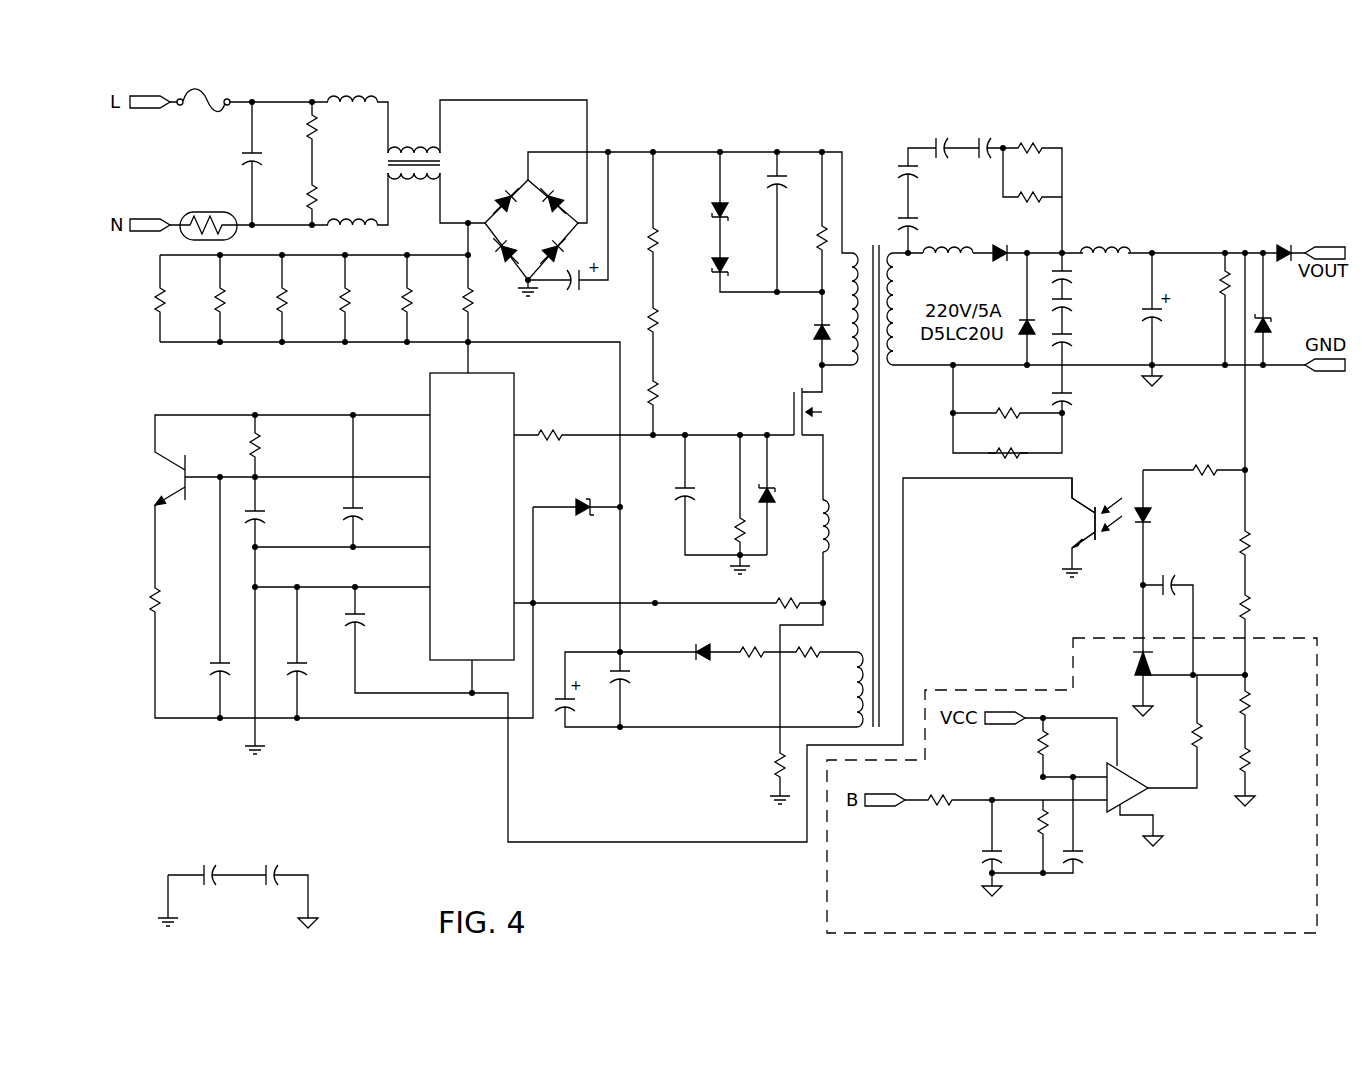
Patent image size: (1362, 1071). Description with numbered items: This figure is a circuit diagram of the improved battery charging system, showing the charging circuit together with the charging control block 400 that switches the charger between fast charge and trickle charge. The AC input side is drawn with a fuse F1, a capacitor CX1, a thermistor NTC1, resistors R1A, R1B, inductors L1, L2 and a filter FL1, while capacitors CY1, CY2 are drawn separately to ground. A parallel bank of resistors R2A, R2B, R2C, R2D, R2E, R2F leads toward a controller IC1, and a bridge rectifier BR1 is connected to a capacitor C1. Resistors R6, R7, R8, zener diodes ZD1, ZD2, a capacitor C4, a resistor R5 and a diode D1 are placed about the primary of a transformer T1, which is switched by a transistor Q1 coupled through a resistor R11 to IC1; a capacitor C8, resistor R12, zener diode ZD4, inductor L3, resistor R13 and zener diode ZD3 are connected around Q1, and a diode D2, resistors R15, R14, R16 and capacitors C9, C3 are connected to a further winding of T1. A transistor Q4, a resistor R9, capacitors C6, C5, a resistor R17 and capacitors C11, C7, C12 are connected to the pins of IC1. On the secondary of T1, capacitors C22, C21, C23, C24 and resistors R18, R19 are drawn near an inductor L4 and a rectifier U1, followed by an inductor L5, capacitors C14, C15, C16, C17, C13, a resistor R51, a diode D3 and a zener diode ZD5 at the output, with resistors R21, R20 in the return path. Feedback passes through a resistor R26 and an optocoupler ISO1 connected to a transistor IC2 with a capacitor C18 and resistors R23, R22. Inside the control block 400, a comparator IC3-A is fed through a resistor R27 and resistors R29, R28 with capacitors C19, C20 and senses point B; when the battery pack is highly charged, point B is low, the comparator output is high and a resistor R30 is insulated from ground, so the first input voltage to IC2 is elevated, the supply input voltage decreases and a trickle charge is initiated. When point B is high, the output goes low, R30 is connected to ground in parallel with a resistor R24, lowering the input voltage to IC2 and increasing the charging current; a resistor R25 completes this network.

The fuse F1 is at (203, 91).
The X capacitor CX1 is at (228, 157).
The NTC thermistor NTC1 is at (208, 213).
The resistor R1A is at (293, 127).
The resistor R1B is at (293, 197).
The inductor L1 is at (353, 85).
The inductor L2 is at (353, 213).
The line filter FL1 is at (414, 151).
The resistor R2A is at (140, 300).
The resistor R2B is at (200, 300).
The resistor R2C is at (262, 300).
The resistor R2D is at (325, 300).
The resistor R2E is at (387, 300).
The resistor R2F is at (449, 300).
The bridge rectifier BR1 is at (520, 223).
The bulk capacitor C1 is at (575, 296).
The resistor R6 is at (639, 240).
The resistor R7 is at (668, 320).
The resistor R8 is at (668, 393).
The zener diode ZD1 is at (698, 210).
The zener diode ZD2 is at (698, 265).
The capacitor C4 is at (758, 180).
The resistor R5 is at (808, 238).
The diode D1 is at (806, 332).
The transformer T1 is at (857, 481).
The switching transistor Q1 is at (832, 411).
The resistor R11 is at (551, 425).
The capacitor C8 is at (696, 483).
The resistor R12 is at (720, 530).
The zener diode ZD4 is at (786, 487).
The inductor L3 is at (813, 526).
The resistor R13 is at (788, 593).
The zener diode ZD3 is at (585, 497).
The diode D2 is at (703, 637).
The resistor R15 is at (752, 668).
The resistor R14 is at (809, 668).
The resistor R16 is at (761, 765).
The capacitor C9 is at (641, 675).
The capacitor C3 is at (584, 703).
The PWM controller IC IC1 is at (472, 516).
The transistor Q4 is at (144, 486).
The resistor R9 is at (269, 445).
The capacitor C6 is at (273, 515).
The capacitor C5 is at (372, 512).
The resistor R17 is at (176, 600).
The capacitor C11 is at (199, 667).
The capacitor C7 is at (315, 667).
The capacitor C12 is at (379, 618).
The capacitor C22 is at (885, 170).
The capacitor C21 is at (926, 222).
The capacitor C23 is at (936, 131).
The capacitor C24 is at (988, 131).
The resistor R18 is at (1030, 136).
The resistor R19 is at (1030, 187).
The inductor L4 is at (948, 267).
The output rectifier diode U1 is at (1000, 267).
The inductor L5 is at (1106, 236).
The capacitor C14 is at (1082, 275).
The capacitor C15 is at (1082, 303).
The capacitor C16 is at (1082, 338).
The capacitor C17 is at (1082, 397).
The output capacitor C13 is at (1174, 314).
The resistor R51 is at (1207, 283).
The diode D3 is at (1284, 235).
The zener diode ZD5 is at (1281, 320).
The resistor R21 is at (1007, 402).
The resistor R20 is at (1007, 442).
The resistor R26 is at (1205, 459).
The optocoupler ISO1 is at (1146, 513).
The capacitor C18 is at (1184, 577).
The resistor R23 is at (1266, 543).
The resistor R22 is at (1266, 607).
The transistor IC2 is at (1123, 664).
The resistor R30 is at (1216, 735).
The resistor R24 is at (1268, 703).
The resistor R25 is at (1268, 760).
The resistor R29 is at (1063, 743).
The comparator IC3-A is at (1141, 783).
The resistor R27 is at (940, 790).
The resistor R28 is at (1025, 822).
The capacitor C19 is at (964, 855).
The capacitor C20 is at (1097, 855).
The charging control block 400 is at (835, 873).
The Y capacitor CY1 is at (207, 858).
The Y capacitor CY2 is at (270, 858).